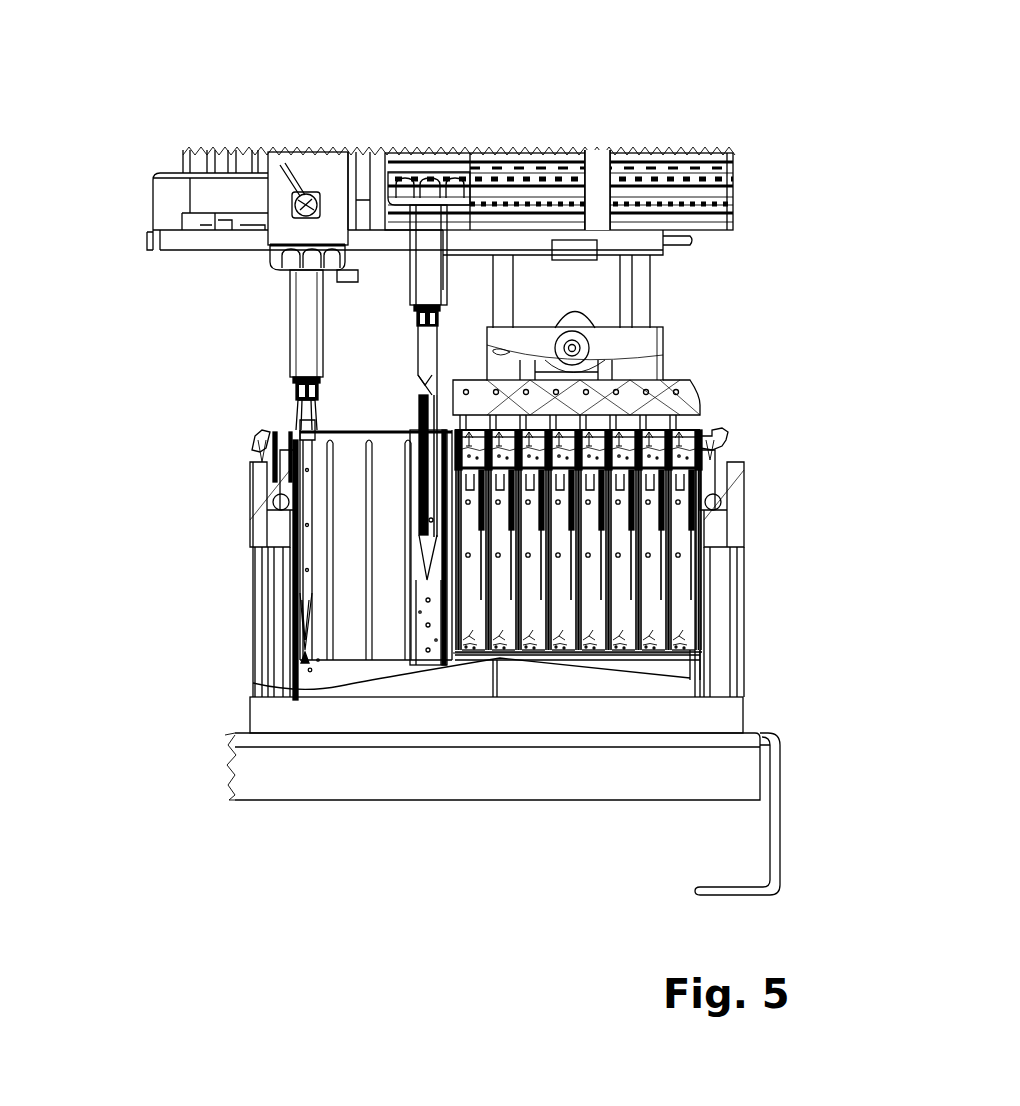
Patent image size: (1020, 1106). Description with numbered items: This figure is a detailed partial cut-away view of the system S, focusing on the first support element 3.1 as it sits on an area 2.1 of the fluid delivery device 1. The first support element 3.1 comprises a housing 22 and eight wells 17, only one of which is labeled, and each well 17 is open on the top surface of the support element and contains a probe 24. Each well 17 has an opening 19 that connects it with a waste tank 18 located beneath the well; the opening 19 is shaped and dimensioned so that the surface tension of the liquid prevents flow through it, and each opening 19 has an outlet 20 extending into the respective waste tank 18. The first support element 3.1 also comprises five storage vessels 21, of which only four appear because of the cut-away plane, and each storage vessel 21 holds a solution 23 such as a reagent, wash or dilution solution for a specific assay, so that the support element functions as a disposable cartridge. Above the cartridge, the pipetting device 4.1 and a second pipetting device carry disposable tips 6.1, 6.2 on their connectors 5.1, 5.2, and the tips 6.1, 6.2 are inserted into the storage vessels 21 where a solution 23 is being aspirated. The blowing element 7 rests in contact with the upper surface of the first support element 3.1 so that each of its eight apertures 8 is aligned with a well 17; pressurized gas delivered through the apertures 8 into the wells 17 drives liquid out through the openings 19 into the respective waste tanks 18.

The system S is at (154, 91).
The fluid delivery device 1 is at (762, 190).
The area 2.1 is at (756, 697).
The first support element 3.1 is at (766, 424).
The pipetting device 4.1 is at (280, 222).
The connector 5.1 is at (293, 377).
The connector 5.2 is at (417, 275).
The disposable tip 6.1 is at (290, 430).
The disposable tip 6.2 is at (427, 350).
The blowing element 7 is at (650, 347).
The aperture 8 is at (700, 417).
The well 17 is at (723, 447).
The waste tank 18 is at (678, 572).
The opening 19 is at (665, 453).
The outlet 20 is at (717, 480).
The storage vessel 21 is at (318, 628).
The housing 22 is at (455, 582).
The solution 23 is at (310, 675).
The probe 24 is at (410, 450).